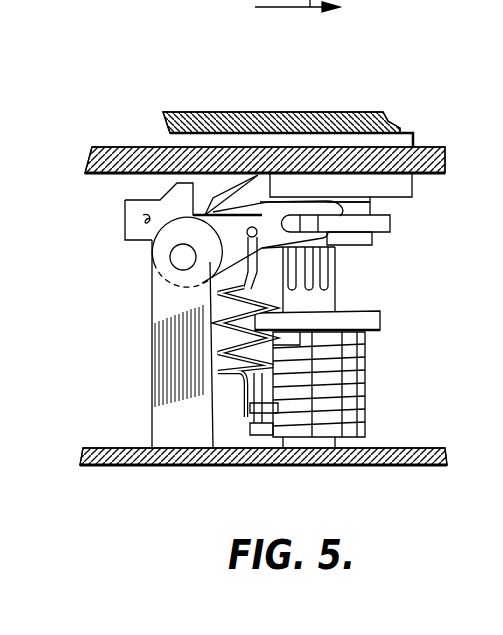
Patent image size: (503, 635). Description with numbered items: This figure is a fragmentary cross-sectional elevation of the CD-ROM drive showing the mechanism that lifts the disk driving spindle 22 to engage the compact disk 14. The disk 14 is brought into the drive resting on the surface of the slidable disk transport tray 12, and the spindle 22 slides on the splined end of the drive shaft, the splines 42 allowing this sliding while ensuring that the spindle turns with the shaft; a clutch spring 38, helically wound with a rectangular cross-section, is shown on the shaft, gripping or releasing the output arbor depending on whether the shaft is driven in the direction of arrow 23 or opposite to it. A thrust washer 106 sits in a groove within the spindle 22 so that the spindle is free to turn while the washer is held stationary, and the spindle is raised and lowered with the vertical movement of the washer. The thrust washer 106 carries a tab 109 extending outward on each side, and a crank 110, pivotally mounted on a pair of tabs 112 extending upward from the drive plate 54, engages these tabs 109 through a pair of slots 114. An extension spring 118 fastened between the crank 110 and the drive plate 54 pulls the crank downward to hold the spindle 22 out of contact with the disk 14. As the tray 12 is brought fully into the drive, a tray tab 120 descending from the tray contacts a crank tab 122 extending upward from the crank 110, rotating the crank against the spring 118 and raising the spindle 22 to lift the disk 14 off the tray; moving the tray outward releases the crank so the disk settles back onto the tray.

The disk transport tray 12 is at (212, 198).
The compact disk 14 is at (327, 112).
The spindle 22 is at (411, 197).
The arrow 23 is at (10, 353).
The clutch spring 38 is at (365, 378).
The splines 42 is at (333, 275).
The drive plate 54 is at (130, 448).
The thrust washer 106 is at (391, 230).
The tab 109 is at (350, 203).
The crank 110 is at (124, 226).
The tabs 112 is at (151, 375).
The slots 114 is at (274, 202).
The extension spring 118 is at (381, 312).
The tray tab 120 is at (193, 215).
The crank tab 122 is at (147, 212).